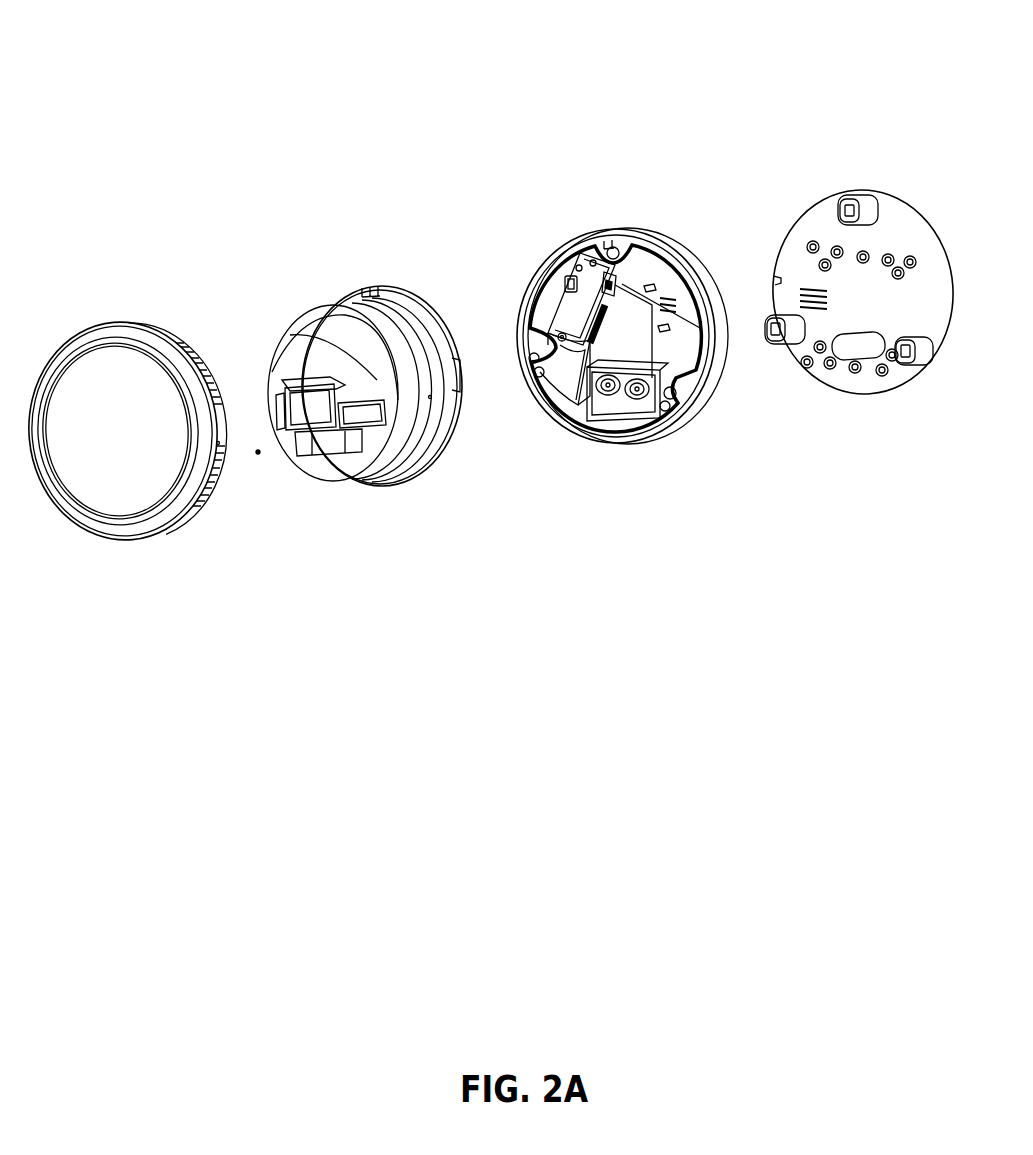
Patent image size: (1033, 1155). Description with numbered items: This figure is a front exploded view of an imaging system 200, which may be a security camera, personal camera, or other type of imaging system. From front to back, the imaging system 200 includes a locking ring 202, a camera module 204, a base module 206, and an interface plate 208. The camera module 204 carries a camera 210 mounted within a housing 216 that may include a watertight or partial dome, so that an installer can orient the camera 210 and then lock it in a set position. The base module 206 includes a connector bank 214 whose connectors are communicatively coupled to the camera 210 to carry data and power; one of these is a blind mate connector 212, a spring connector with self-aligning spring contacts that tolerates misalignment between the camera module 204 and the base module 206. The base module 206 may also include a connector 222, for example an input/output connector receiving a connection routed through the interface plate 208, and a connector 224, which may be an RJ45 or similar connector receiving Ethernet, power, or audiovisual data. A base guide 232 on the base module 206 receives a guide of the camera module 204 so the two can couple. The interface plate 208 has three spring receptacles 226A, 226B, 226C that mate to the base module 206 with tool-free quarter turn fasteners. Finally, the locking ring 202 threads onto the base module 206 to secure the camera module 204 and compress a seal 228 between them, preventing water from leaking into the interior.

The imaging system 200 is at (202, 38).
The locking ring 202 is at (134, 374).
The camera module 204 is at (390, 444).
The base module 206 is at (620, 280).
The interface plate 208 is at (862, 368).
The camera 210 is at (270, 494).
The blind mate connector 212 is at (524, 289).
The connector bank 214 is at (523, 242).
The housing 216 is at (289, 384).
The connector 222 is at (582, 415).
The connector 224 is at (682, 271).
The spring receptacle 226A is at (798, 170).
The spring receptacle 226B is at (732, 400).
The spring receptacle 226C is at (854, 461).
The seal 228 is at (646, 471).
The base guide 232 is at (567, 338).